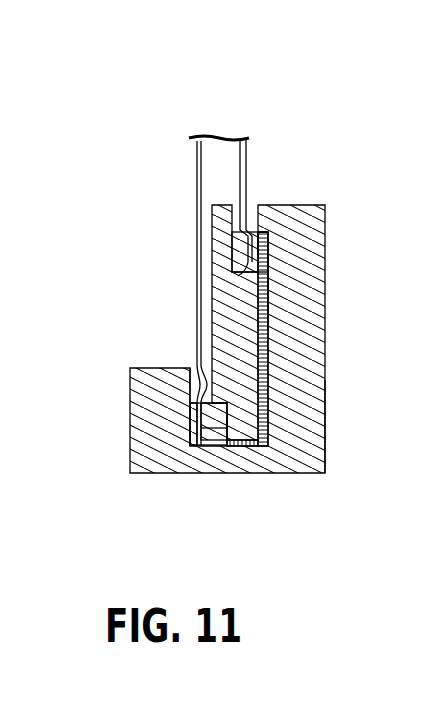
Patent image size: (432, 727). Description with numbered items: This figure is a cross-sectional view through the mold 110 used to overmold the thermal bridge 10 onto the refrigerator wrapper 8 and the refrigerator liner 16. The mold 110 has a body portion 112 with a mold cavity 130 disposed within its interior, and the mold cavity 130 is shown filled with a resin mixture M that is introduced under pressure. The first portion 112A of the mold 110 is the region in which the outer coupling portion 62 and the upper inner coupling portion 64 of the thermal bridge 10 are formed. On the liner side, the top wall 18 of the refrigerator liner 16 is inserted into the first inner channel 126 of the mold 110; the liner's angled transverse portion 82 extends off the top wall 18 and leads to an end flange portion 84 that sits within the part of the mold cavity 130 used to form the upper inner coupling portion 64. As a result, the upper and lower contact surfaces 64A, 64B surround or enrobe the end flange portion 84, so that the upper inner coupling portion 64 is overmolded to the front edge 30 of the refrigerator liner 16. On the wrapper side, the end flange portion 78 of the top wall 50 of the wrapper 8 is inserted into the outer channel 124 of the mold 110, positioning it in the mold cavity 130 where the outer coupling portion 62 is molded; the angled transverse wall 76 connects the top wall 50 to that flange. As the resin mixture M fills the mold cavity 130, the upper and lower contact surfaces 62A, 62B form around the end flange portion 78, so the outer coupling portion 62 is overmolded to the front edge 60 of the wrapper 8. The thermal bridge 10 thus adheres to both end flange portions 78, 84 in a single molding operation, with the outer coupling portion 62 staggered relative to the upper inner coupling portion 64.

The wrapper 8 is at (197, 259).
The thermal bridge 10 is at (247, 315).
The refrigerator liner 16 is at (285, 157).
The top wall 18 is at (243, 160).
The front edge 30 is at (263, 272).
The top wall 50 is at (136, 304).
The front edge 60 is at (212, 490).
The outer coupling portion 62 is at (212, 490).
The upper contact surface 62A is at (190, 410).
The lower contact surface 62B is at (228, 410).
The upper inner coupling portion 64 is at (321, 282).
The upper contact surface 64A is at (263, 288).
The lower contact surface 64B is at (263, 243).
The angled transverse wall 76 is at (200, 362).
The end flange portion 78 is at (197, 405).
The angled transverse portion 82 is at (245, 235).
The end flange portion 84 is at (262, 258).
The mold 110 is at (340, 187).
The body portion 112 is at (281, 343).
The first portion 112A is at (308, 427).
The outer channel 124 is at (190, 385).
The first inner channel 126 is at (249, 217).
The mold cavity 130 is at (268, 393).
The resin mixture M is at (266, 357).